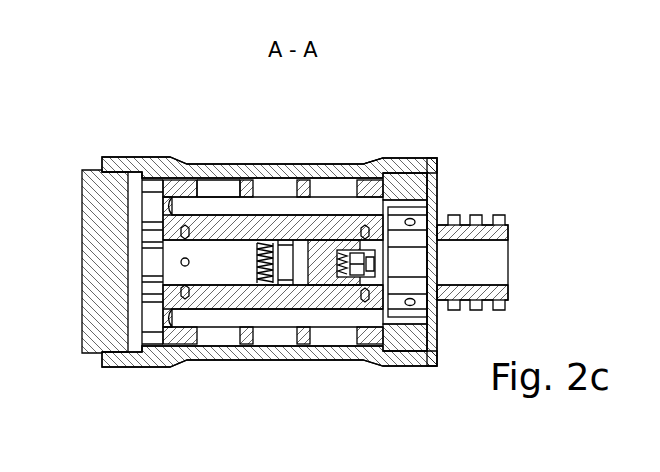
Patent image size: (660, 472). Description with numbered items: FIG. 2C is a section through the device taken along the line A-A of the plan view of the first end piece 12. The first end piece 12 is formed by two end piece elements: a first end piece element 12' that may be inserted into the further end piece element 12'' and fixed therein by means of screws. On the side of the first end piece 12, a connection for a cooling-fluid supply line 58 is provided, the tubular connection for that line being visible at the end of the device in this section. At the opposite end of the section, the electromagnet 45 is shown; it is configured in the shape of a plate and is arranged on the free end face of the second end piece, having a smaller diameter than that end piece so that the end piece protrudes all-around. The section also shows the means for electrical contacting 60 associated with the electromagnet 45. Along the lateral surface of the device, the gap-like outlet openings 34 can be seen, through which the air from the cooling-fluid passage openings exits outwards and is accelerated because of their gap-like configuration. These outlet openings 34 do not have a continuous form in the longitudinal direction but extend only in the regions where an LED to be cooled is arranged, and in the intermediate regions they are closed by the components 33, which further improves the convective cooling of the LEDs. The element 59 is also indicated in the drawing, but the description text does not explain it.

The first end piece 12 is at (279, 224).
The first end piece element 12' is at (464, 247).
The further end piece element 12'' is at (393, 126).
The components 33 is at (313, 183).
The gap-like outlet openings 34 is at (218, 193).
The electromagnet 45 is at (92, 188).
The cooling-fluid supply line 58 is at (508, 238).
The locking element 59 is at (366, 276).
The means for electrical contacting 60 is at (263, 240).